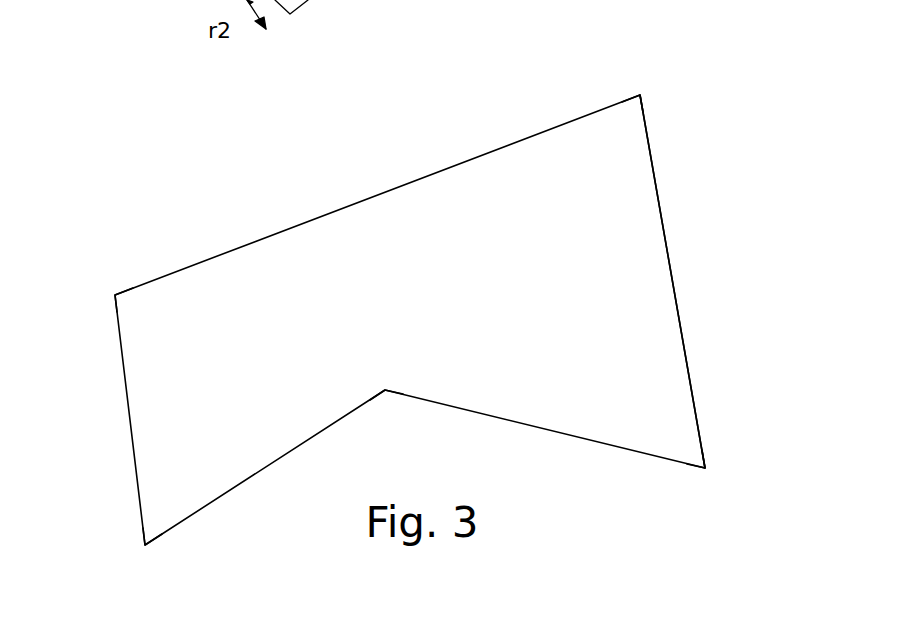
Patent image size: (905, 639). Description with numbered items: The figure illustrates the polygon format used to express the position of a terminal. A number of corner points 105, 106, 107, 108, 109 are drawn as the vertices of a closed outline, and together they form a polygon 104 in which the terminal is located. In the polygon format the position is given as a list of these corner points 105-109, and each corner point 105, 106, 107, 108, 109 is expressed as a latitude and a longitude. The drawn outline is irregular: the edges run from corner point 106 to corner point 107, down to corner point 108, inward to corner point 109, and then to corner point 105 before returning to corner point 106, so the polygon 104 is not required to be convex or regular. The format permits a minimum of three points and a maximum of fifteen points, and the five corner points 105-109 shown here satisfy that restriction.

The polygon 104 is at (673, 282).
The corner point 105 is at (145, 545).
The corner point 106 is at (115, 295).
The corner point 107 is at (640, 94).
The corner point 108 is at (705, 468).
The corner point 109 is at (385, 390).